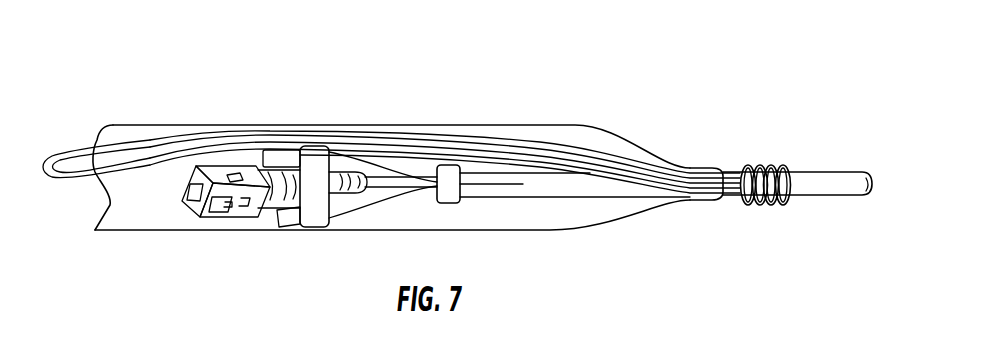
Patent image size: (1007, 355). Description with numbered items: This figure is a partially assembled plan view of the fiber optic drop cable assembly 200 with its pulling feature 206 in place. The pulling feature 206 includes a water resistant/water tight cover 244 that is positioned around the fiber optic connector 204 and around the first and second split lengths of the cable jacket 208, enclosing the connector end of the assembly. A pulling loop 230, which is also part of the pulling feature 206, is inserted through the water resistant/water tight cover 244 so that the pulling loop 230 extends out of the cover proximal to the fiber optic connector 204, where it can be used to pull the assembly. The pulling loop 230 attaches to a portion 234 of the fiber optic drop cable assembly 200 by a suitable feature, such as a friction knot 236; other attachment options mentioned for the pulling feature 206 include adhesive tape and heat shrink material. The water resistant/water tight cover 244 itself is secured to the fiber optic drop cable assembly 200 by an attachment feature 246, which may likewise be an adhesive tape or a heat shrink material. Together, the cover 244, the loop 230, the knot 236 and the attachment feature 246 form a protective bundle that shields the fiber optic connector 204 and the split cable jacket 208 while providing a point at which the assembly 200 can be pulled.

The fiber optic drop cable assembly 200 is at (342, 92).
The fiber optic connector 204 is at (223, 220).
The pulling feature 206 is at (553, 135).
The cable jacket 208 is at (546, 197).
The pulling loop 230 is at (58, 152).
The portion of the fiber optic drop cable assembly 234 is at (785, 170).
The friction knot 236 is at (763, 166).
The water resistant/water tight cover 244 is at (185, 232).
The attachment feature 246 is at (712, 168).